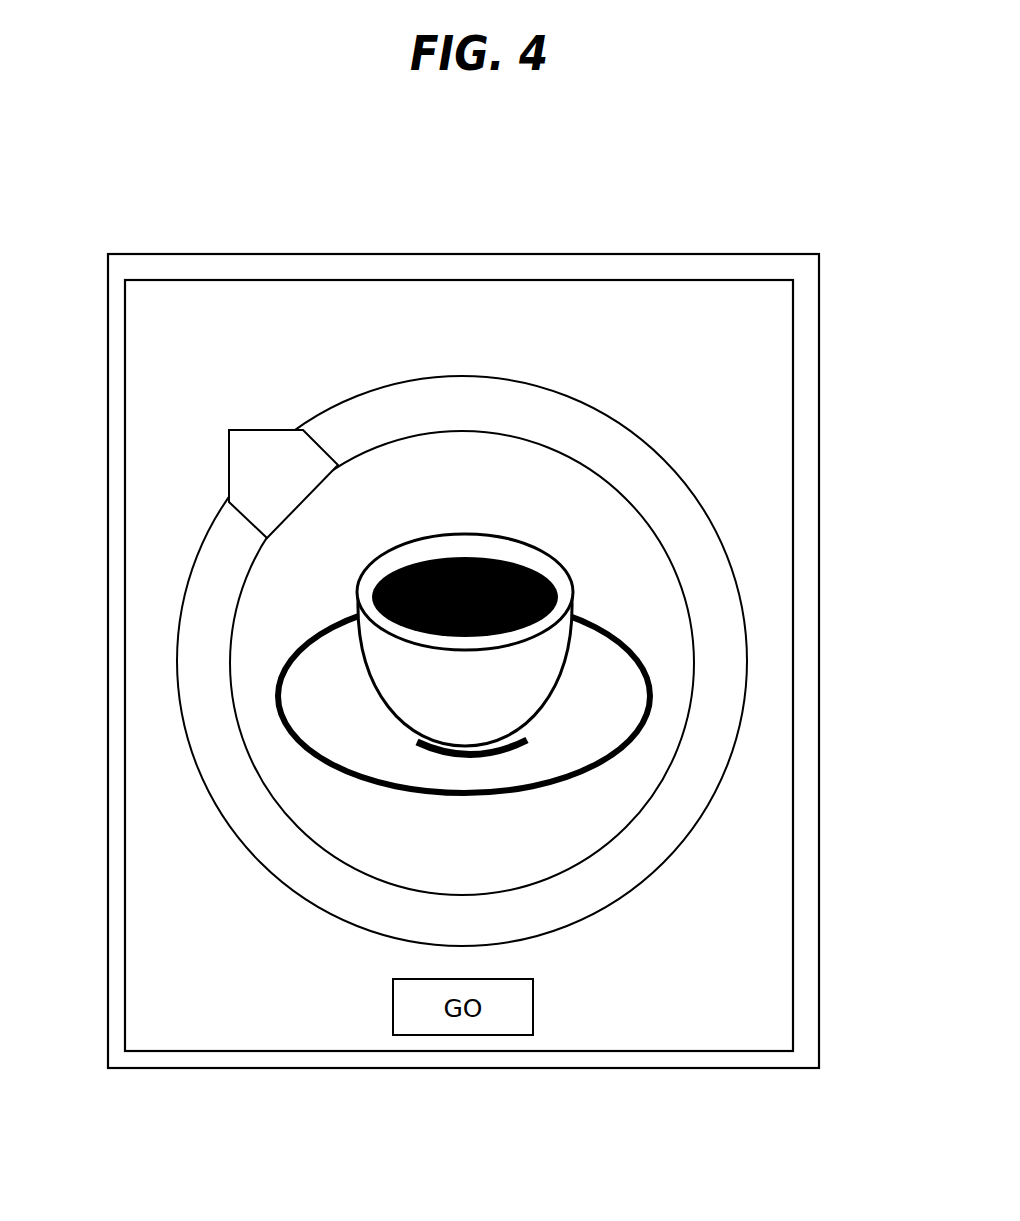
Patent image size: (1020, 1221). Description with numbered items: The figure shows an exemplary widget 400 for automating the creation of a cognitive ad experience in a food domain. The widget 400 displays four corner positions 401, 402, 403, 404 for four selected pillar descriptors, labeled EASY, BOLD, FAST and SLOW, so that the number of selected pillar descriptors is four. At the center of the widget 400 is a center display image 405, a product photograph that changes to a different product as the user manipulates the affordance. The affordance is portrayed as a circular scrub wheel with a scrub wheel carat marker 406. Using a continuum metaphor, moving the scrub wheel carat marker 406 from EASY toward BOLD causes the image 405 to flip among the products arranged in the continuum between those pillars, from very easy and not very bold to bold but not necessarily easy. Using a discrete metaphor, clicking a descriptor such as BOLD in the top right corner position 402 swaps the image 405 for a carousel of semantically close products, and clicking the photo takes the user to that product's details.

The widget 400 is at (135, 211).
The corner position 401 is at (195, 323).
The corner position 402 is at (722, 350).
The corner position 403 is at (723, 998).
The corner position 404 is at (205, 983).
The center display image 405 is at (278, 710).
The scrub wheel carat marker 406 is at (229, 467).